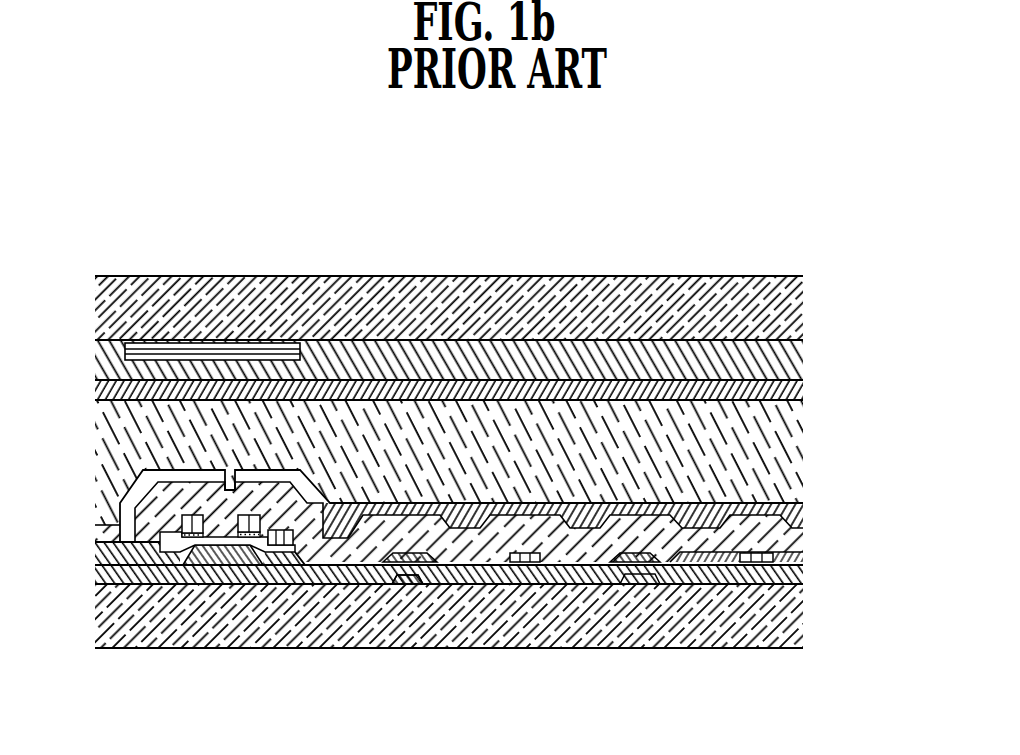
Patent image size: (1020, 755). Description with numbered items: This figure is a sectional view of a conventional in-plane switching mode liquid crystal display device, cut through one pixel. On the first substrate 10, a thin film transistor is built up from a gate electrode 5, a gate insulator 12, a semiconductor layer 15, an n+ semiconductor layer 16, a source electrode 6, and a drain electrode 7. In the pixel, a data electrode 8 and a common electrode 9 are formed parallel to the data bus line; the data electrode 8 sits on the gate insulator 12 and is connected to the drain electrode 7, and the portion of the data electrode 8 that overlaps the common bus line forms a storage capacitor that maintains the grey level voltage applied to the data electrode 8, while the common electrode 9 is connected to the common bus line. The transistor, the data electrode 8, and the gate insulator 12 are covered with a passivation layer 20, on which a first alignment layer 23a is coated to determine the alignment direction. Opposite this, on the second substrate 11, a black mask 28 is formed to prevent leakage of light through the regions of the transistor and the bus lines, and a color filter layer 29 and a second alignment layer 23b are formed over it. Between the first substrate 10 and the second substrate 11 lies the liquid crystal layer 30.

The gate electrode 5 is at (227, 580).
The source electrode 6 is at (182, 530).
The drain electrode 7 is at (318, 560).
The data electrode 8 is at (527, 562).
The common electrode 9 is at (413, 582).
The first substrate 10 is at (693, 638).
The second substrate 11 is at (660, 303).
The gate insulator 12 is at (790, 572).
The semiconductor layer 15 is at (175, 560).
The n+ semiconductor layer 16 is at (268, 565).
The passivation layer 20 is at (787, 550).
The first alignment layer 23a is at (790, 500).
The second alignment layer 23b is at (787, 386).
The black mask 28 is at (197, 357).
The color filter layer 29 is at (787, 358).
The liquid crystal layer 30 is at (95, 442).